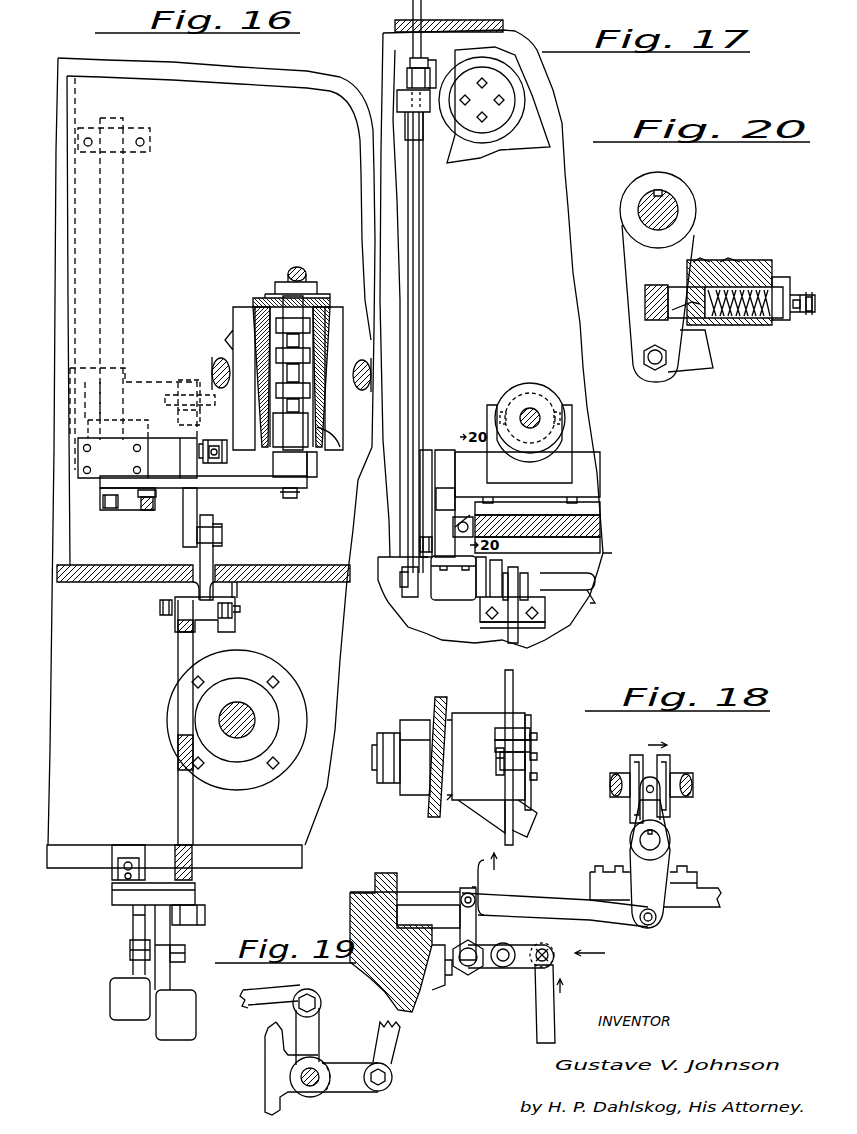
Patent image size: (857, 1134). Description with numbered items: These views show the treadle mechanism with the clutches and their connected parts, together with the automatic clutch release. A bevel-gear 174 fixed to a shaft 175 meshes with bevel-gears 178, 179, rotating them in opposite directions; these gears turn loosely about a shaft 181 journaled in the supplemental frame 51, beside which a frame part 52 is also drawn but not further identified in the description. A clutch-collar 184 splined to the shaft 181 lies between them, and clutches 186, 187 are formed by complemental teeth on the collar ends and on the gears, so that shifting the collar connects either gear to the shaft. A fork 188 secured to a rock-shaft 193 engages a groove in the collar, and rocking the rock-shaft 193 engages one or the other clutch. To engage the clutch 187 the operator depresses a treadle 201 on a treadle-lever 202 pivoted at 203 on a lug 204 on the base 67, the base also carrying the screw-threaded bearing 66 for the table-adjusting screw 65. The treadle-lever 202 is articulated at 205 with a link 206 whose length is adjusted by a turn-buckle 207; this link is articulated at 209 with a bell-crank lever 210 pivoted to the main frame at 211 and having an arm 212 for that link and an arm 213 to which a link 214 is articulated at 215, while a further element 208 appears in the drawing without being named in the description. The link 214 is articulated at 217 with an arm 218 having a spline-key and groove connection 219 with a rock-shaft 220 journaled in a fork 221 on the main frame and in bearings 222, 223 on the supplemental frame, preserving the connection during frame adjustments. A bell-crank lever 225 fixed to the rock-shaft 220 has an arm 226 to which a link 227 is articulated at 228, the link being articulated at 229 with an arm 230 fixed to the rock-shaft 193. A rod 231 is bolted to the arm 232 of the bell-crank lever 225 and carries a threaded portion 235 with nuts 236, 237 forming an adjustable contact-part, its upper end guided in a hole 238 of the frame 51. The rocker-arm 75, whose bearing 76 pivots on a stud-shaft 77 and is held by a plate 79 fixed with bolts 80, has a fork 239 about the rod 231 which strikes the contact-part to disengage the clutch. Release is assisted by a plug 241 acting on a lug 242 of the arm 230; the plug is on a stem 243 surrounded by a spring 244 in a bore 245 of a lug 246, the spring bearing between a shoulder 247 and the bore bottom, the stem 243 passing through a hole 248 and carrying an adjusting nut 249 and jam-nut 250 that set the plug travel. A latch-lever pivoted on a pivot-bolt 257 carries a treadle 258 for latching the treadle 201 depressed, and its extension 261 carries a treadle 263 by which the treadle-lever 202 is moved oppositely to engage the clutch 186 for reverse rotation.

In FIG. 16, the supplemental frame 51 is at (328, 222).
In FIG. 17, the supplemental frame 51 is at (565, 205).
In FIG. 18, the supplemental frame 51 is at (430, 700).
In FIG. 16, the frame bottom wall 52 is at (318, 582).
In FIG. 16, the screw 65 is at (255, 716).
In FIG. 16, the screw-threaded bearing 66 is at (250, 752).
In FIG. 16, the base 67 is at (280, 868).
In FIG. 18, the arm 75 is at (530, 812).
In FIG. 17, the bearing 76 is at (520, 108).
In FIG. 18, the bearing 76 is at (465, 720).
In FIG. 18, the stud-shaft 77 is at (375, 765).
In FIG. 17, the plate 79 is at (495, 125).
In FIG. 18, the plate 79 is at (531, 730).
In FIG. 17, the bolts 80 is at (485, 82).
In FIG. 18, the bolts 80 is at (538, 777).
In FIG. 16, the bevel-gear 174 is at (318, 285).
In FIG. 16, the shaft 175 is at (290, 268).
In FIG. 16, the bevel-gear 178 is at (232, 320).
In FIG. 16, the bevel-gear 179 is at (340, 337).
In FIG. 16, the shaft 181 is at (360, 392).
In FIG. 17, the shaft 181 is at (532, 408).
In FIG. 18, the shaft 181 is at (695, 786).
In FIG. 16, the clutch-collar 184 is at (300, 345).
In FIG. 17, the clutch-collar 184 is at (555, 395).
In FIG. 18, the clutch-collar 184 is at (672, 752).
In FIG. 16, the clutch 186 is at (342, 445).
In FIG. 16, the clutch 187 is at (250, 300).
In FIG. 16, the fork 188 is at (290, 430).
In FIG. 17, the fork 188 is at (572, 440).
In FIG. 18, the fork 188 is at (656, 812).
In FIG. 16, the rock-shaft 193 is at (290, 464).
In FIG. 17, the rock-shaft 193 is at (428, 470).
In FIG. 20, the rock-shaft 193 is at (676, 205).
In FIG. 18, the rock-shaft 193 is at (653, 842).
In FIG. 16, the treadle 201 is at (197, 1025).
In FIG. 16, the treadle-lever 202 is at (171, 978).
In FIG. 16, the pivot 203 is at (128, 920).
In FIG. 16, the lug 204 is at (148, 865).
In FIG. 16, the articulation 205 is at (206, 915).
In FIG. 16, the link 206 is at (193, 878).
In FIG. 19, the link 206 is at (270, 1008).
In FIG. 16, the turn-buckle 207 is at (194, 835).
In FIG. 16, the bracket 208 is at (150, 385).
In FIG. 16, the articulation 209 is at (236, 625).
In FIG. 19, the articulation 209 is at (312, 1002).
In FIG. 16, the bell-crank lever 210 is at (214, 560).
In FIG. 19, the bell-crank lever 210 is at (320, 1032).
In FIG. 16, the pivot 211 is at (241, 609).
In FIG. 19, the pivot 211 is at (312, 1082).
In FIG. 19, the arm 212 is at (268, 1045).
In FIG. 19, the arm 213 is at (350, 1092).
In FIG. 16, the link 214 is at (198, 497).
In FIG. 17, the link 214 is at (519, 635).
In FIG. 18, the link 214 is at (556, 1003).
In FIG. 19, the link 214 is at (393, 1042).
In FIG. 16, the articulation 215 is at (223, 535).
In FIG. 19, the articulation 215 is at (392, 1078).
In FIG. 17, the articulation 217 is at (545, 570).
In FIG. 18, the articulation 217 is at (555, 958).
In FIG. 17, the arm 218 is at (492, 625).
In FIG. 18, the arm 218 is at (515, 968).
In FIG. 17, the spline-key and groove connection 219 is at (593, 577).
In FIG. 16, the rock-shaft 220 is at (124, 197).
In FIG. 17, the rock-shaft 220 is at (596, 598).
In FIG. 16, the fork 221 is at (128, 375).
In FIG. 17, the fork 221 is at (528, 595).
In FIG. 16, the bearing 222 is at (130, 443).
In FIG. 17, the bearing 222 is at (458, 600).
In FIG. 16, the bearing 223 is at (152, 140).
In FIG. 16, the bell-crank lever 225 is at (118, 507).
In FIG. 17, the bell-crank lever 225 is at (440, 600).
In FIG. 18, the bell-crank lever 225 is at (455, 912).
In FIG. 18, the arm 226 is at (458, 890).
In FIG. 16, the link 227 is at (248, 488).
In FIG. 17, the link 227 is at (436, 520).
In FIG. 20, the link 227 is at (690, 372).
In FIG. 18, the link 227 is at (540, 903).
In FIG. 18, the articulation 228 is at (470, 884).
In FIG. 16, the articulation 229 is at (295, 500).
In FIG. 17, the articulation 229 is at (419, 543).
In FIG. 20, the articulation 229 is at (655, 372).
In FIG. 18, the articulation 229 is at (656, 924).
In FIG. 16, the arm 230 is at (317, 470).
In FIG. 17, the arm 230 is at (445, 450).
In FIG. 20, the arm 230 is at (624, 268).
In FIG. 18, the arm 230 is at (657, 873).
In FIG. 16, the rod 231 is at (152, 512).
In FIG. 17, the rod 231 is at (424, 312).
In FIG. 18, the rod 231 is at (514, 862).
In FIG. 18, the arm 232 is at (483, 962).
In FIG. 17, the threaded portion 235 is at (432, 62).
In FIG. 18, the threaded portion 235 is at (494, 735).
In FIG. 17, the nut 236 is at (405, 60).
In FIG. 18, the nut 236 is at (531, 745).
In FIG. 17, the nut 237 is at (405, 78).
In FIG. 18, the nut 237 is at (526, 762).
In FIG. 17, the hole 238 is at (428, 18).
In FIG. 17, the fork 239 is at (396, 100).
In FIG. 18, the fork 239 is at (495, 760).
In FIG. 20, the plug 241 is at (682, 296).
In FIG. 17, the lug 242 is at (436, 498).
In FIG. 20, the lug 242 is at (644, 302).
In FIG. 20, the stem 243 is at (752, 318).
In FIG. 20, the spring 244 is at (762, 272).
In FIG. 20, the bore 245 is at (735, 270).
In FIG. 16, the lug 246 is at (232, 468).
In FIG. 17, the lug 246 is at (463, 517).
In FIG. 20, the lug 246 is at (705, 270).
In FIG. 20, the shoulder 247 is at (680, 318).
In FIG. 20, the hole 248 is at (785, 282).
In FIG. 16, the adjusting nut 249 is at (220, 445).
In FIG. 20, the adjusting nut 249 is at (797, 312).
In FIG. 16, the jam-nut 250 is at (202, 428).
In FIG. 20, the jam-nut 250 is at (810, 314).
In FIG. 16, the pivot-bolt 257 is at (186, 952).
In FIG. 16, the treadle 258 is at (108, 1000).
In FIG. 16, the extension 261 is at (128, 950).
In FIG. 16, the treadle 263 is at (112, 897).